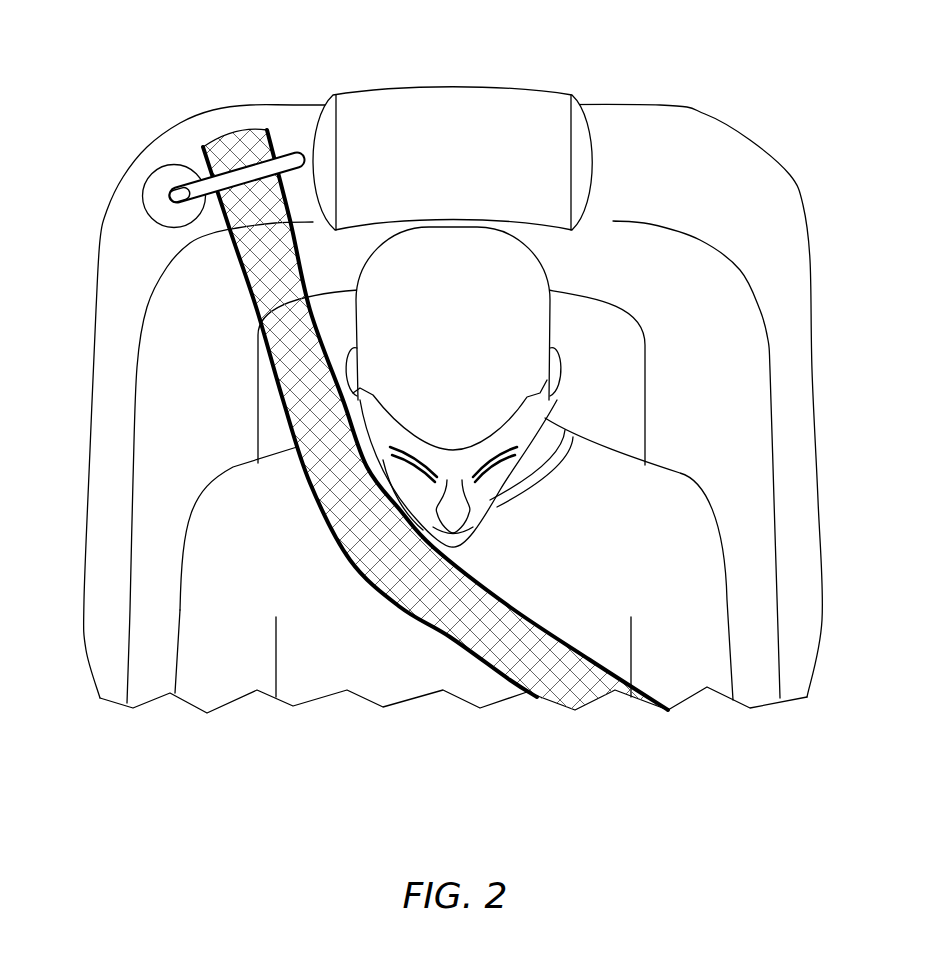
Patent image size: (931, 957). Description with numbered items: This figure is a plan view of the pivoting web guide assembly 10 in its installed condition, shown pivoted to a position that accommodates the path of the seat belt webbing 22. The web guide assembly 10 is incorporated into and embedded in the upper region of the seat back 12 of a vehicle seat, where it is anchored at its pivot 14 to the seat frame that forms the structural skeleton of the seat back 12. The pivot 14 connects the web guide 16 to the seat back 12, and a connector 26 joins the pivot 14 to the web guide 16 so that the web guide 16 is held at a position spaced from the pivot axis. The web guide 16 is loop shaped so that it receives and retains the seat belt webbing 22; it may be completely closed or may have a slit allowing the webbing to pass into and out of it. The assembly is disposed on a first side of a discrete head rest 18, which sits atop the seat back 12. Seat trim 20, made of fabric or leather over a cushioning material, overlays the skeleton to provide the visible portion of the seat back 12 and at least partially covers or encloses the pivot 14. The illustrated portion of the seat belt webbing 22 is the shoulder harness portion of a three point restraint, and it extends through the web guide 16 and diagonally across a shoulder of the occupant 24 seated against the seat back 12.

The web guide assembly 10 is at (165, 152).
The seat back 12 is at (672, 108).
The pivot 14 is at (142, 208).
The web guide 16 is at (293, 147).
The head rest 18 is at (500, 88).
The seat trim 20 is at (138, 173).
The seat belt webbing 22 is at (232, 286).
The occupant 24 is at (680, 472).
The connector 26 is at (181, 187).